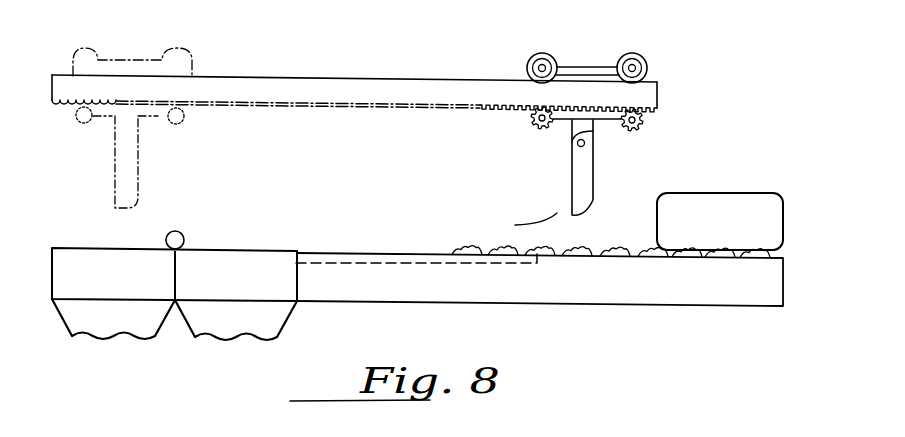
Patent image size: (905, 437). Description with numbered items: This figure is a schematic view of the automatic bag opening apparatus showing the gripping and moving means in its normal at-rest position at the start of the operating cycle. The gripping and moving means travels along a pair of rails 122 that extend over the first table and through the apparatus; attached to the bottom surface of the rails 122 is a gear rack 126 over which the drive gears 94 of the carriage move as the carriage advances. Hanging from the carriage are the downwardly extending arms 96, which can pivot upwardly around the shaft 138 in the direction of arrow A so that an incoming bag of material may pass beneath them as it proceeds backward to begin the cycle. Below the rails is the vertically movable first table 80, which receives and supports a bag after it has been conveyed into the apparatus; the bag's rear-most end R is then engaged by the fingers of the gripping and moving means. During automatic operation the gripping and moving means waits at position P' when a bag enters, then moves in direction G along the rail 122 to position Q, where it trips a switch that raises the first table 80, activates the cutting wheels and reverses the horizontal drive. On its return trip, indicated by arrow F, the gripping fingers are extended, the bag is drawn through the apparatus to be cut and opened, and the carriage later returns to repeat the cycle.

The rails 122 is at (383, 79).
The gear rack 126 is at (508, 108).
The pinion gear assembly 94 is at (618, 145).
The downwardly extending arms 96 is at (587, 183).
The shaft 138 is at (577, 144).
The first table 80 is at (475, 268).
The position Q is at (660, 65).
The arrow A is at (575, 226).
The direction of gripper movement G is at (160, 143).
The position P' is at (59, 155).
The arrow F is at (645, 185).
The rear-most end R is at (743, 207).